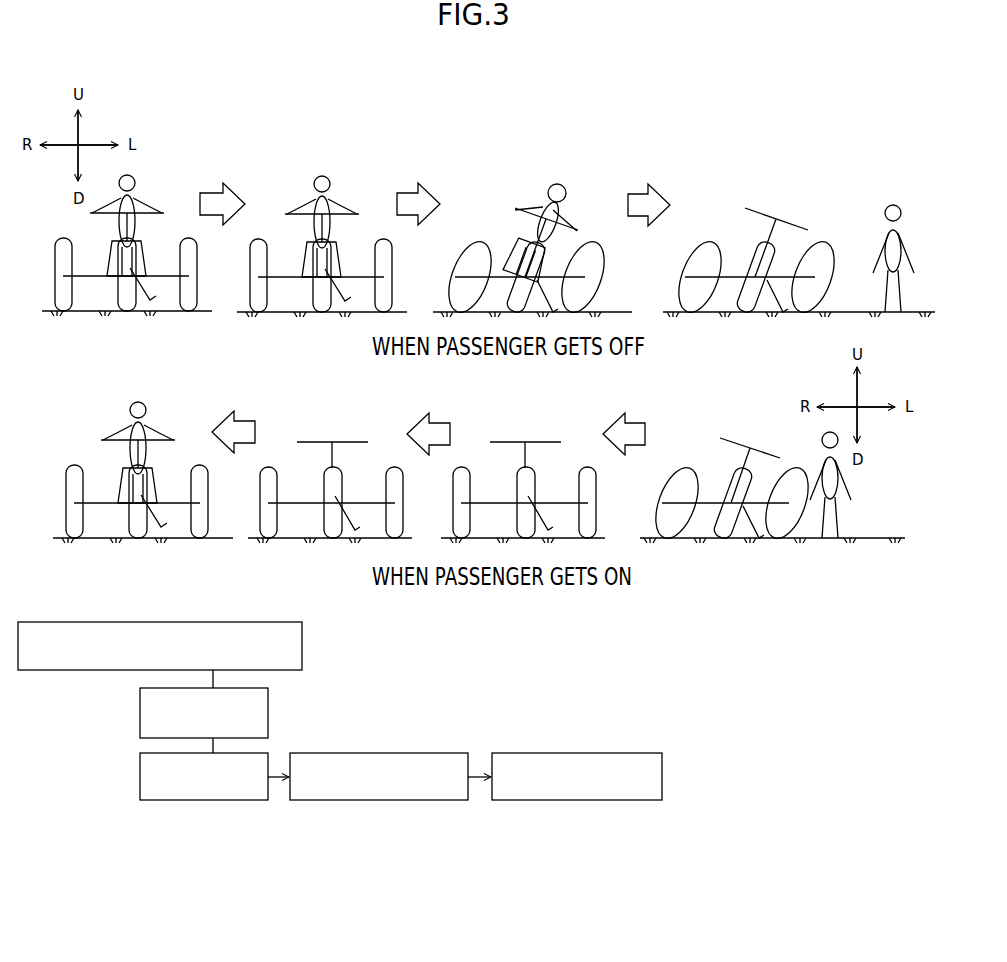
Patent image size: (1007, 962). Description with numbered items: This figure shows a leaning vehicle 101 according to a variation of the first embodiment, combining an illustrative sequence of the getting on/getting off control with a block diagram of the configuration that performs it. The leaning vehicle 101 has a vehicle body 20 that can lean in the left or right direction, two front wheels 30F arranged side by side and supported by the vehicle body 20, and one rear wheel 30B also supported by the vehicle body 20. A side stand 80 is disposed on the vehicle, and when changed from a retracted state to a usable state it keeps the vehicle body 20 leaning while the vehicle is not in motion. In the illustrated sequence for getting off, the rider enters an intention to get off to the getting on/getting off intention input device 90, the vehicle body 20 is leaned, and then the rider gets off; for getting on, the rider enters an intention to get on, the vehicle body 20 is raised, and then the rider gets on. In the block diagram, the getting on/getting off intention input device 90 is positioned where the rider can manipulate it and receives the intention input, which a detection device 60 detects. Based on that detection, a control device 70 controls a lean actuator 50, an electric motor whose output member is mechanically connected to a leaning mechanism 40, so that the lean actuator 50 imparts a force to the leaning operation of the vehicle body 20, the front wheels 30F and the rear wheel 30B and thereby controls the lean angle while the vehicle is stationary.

The leaning vehicle 101 is at (149, 206).
The vehicle body 20 is at (132, 229).
The front wheels 30F is at (72, 258).
The rear wheel 30B is at (118, 290).
The side stand 80 is at (151, 300).
The getting on/getting off intention input device 90 is at (303, 646).
The detection device 60 is at (269, 714).
The control device 70 is at (222, 801).
The lean actuator 50 is at (427, 754).
The leaning mechanism 40 is at (560, 754).